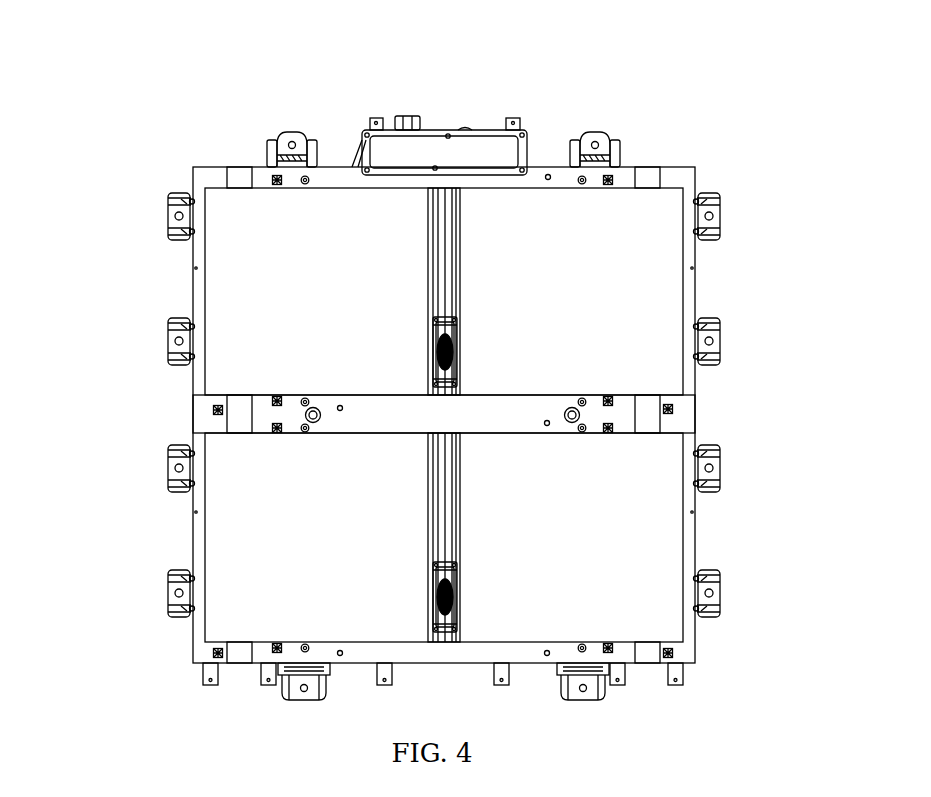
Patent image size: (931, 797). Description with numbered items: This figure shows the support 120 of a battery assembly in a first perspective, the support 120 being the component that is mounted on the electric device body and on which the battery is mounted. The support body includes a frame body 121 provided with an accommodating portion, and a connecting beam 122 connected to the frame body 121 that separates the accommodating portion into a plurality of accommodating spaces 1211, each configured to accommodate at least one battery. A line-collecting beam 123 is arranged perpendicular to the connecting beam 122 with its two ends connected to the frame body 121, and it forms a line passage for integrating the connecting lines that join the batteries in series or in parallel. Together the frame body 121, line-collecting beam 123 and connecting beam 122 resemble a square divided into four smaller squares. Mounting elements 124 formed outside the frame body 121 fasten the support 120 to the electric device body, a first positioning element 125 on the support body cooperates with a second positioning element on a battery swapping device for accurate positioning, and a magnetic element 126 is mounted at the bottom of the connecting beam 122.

The support 120 is at (453, 38).
The frame body 121 is at (192, 532).
The accommodating space 1211 is at (577, 552).
The connecting beam 122 is at (504, 407).
The line-collecting beam 123 is at (440, 312).
The mounting element 124 is at (595, 130).
The first positioning element 125 is at (340, 405).
The magnetic element 126 is at (675, 411).